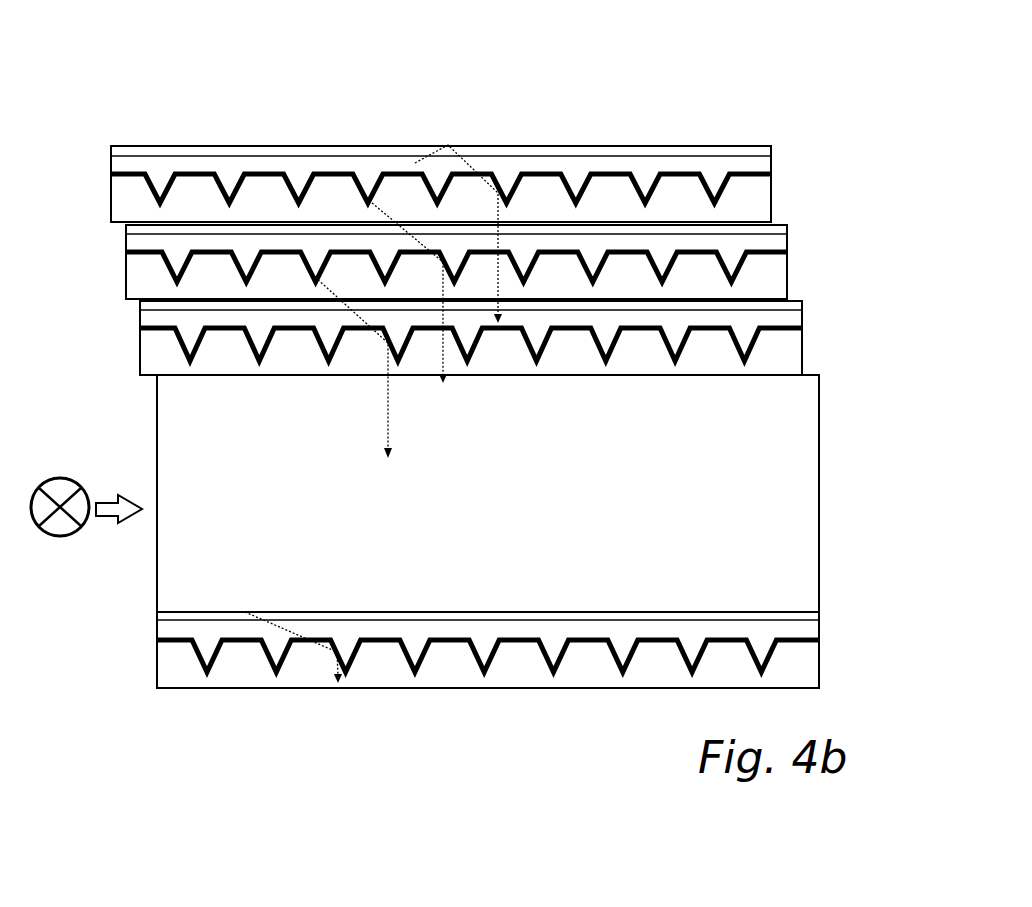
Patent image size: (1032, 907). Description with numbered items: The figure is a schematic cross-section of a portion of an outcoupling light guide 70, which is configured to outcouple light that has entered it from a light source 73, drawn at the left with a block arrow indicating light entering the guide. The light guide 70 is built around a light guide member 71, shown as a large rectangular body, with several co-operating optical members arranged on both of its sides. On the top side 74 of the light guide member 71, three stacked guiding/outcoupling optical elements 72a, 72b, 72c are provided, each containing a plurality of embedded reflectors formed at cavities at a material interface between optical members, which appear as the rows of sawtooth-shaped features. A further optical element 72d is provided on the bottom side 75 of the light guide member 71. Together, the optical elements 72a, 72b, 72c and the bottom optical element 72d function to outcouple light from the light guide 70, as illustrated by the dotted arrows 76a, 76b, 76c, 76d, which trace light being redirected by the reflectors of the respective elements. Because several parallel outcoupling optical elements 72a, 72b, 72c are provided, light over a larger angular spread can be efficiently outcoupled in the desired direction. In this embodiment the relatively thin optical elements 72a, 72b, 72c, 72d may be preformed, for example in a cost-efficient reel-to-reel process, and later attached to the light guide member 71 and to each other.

The outcoupling light guide 70 is at (736, 99).
The light guide member 71 is at (807, 497).
The guiding/outcoupling optical element 72a is at (771, 177).
The guiding/outcoupling optical element 72b is at (787, 255).
The guiding/outcoupling optical element 72c is at (802, 328).
The optical element 72d is at (805, 660).
The light source 73 is at (60, 537).
The top side 74 is at (607, 375).
The bottom side 75 is at (575, 612).
The arrow 76a is at (470, 162).
The arrow 76b is at (386, 213).
The arrow 76c is at (388, 422).
The arrow 76d is at (320, 650).